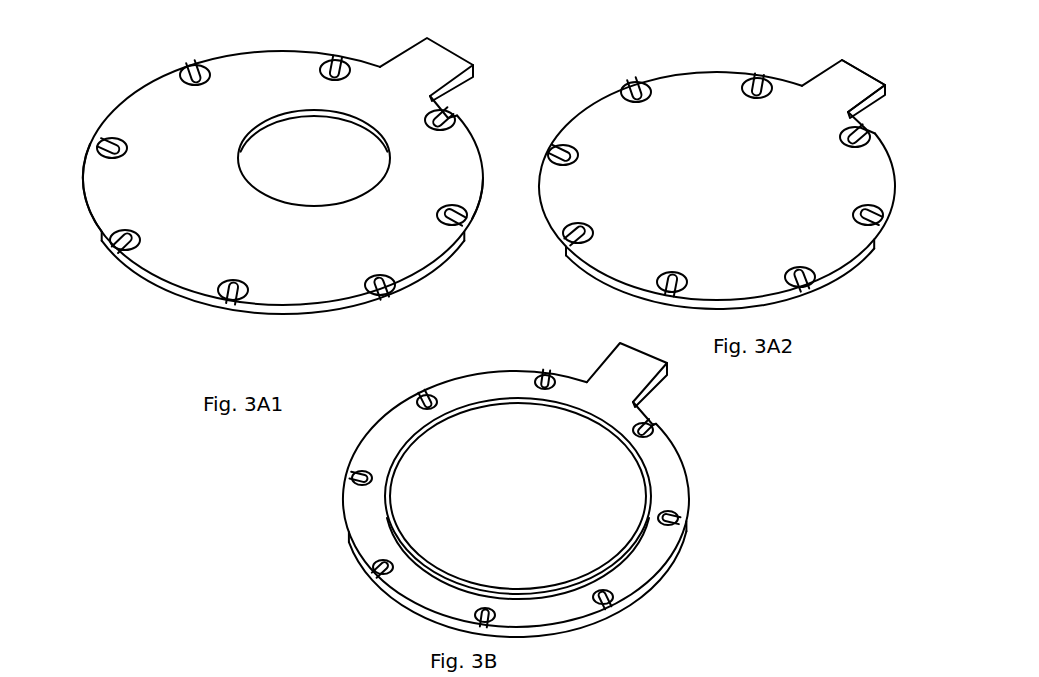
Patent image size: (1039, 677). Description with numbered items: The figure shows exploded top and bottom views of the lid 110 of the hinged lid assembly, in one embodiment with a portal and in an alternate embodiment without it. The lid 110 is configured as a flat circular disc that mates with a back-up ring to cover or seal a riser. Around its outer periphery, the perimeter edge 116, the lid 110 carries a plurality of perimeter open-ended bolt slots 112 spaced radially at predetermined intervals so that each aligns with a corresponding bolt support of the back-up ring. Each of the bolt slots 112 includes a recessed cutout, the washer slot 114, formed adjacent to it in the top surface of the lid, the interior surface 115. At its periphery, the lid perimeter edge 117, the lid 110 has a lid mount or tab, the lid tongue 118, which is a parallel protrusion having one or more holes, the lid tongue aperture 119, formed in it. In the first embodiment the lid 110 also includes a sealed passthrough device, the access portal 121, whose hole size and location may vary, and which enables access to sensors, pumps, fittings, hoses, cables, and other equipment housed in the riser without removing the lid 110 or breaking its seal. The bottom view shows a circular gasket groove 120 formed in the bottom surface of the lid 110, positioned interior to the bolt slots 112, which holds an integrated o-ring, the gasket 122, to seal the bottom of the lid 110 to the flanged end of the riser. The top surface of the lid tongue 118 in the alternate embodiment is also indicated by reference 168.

In FIG. 3A1, the lid 110 is at (520, 66).
In FIG. 3A2, the lid 110 is at (635, 69).
In FIG. 3B, the lid 110 is at (314, 472).
In FIG. 3A1, the bolt slots 112 is at (228, 318).
In FIG. 3A2, the bolt slots 112 is at (806, 301).
In FIG. 3B, the bolt slots 112 is at (546, 372).
In FIG. 3A1, the washer slot 114 is at (217, 287).
In FIG. 3A2, the washer slot 114 is at (885, 222).
In FIG. 3A1, the interior surface 115 is at (140, 190).
In FIG. 3A1, the perimeter edge 116 is at (483, 175).
In FIG. 3A1, the lid perimeter edge 117 is at (345, 312).
In FIG. 3A2, the lid perimeter edge 117 is at (877, 257).
In FIG. 3A1, the lid tongue 118 is at (428, 62).
In FIG. 3A2, the lid tongue 118 is at (871, 97).
In FIG. 3B, the lid tongue 118 is at (667, 378).
In FIG. 3A1, the lid tongue aperture 119 is at (468, 80).
In FIG. 3A2, the lid tongue aperture 119 is at (877, 93).
In FIG. 3B, the gasket groove 120 is at (382, 532).
In FIG. 3A1, the access portal 121 is at (295, 152).
In FIG. 3A1, the gasket 122 is at (170, 123).
In FIG. 3A2, the gasket 122 is at (697, 105).
In FIG. 3B, the gasket 122 is at (350, 488).
In FIG. 3A2, the tab surface 168 is at (843, 83).